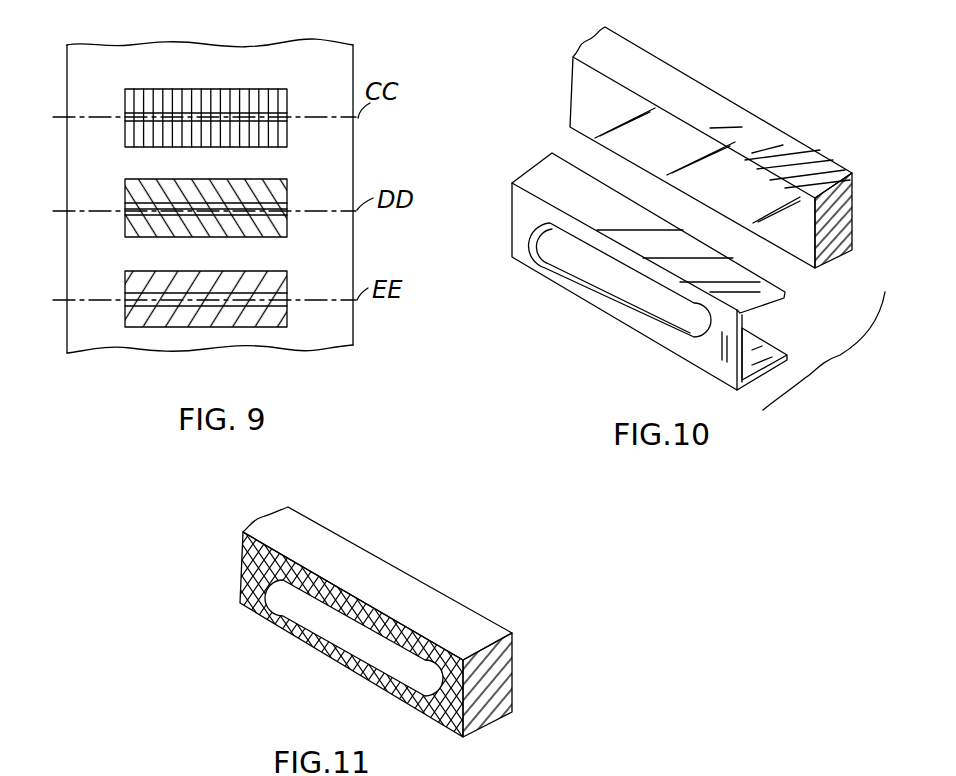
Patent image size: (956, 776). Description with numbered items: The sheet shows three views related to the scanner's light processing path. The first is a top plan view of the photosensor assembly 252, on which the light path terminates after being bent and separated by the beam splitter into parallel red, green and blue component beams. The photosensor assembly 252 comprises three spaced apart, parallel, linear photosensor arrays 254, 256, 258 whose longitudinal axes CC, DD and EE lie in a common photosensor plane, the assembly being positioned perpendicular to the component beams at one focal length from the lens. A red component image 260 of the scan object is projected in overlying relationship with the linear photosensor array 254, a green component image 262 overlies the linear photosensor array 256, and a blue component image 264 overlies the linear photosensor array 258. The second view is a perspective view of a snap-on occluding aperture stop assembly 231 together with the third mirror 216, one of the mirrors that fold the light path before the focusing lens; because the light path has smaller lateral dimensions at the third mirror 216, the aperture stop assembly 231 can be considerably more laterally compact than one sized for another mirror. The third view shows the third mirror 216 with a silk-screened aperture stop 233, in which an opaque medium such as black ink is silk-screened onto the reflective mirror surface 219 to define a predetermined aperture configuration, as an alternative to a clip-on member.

In FIG. 9, the photosensor assembly 252 is at (353, 67).
In FIG. 9, the linear photosensor array 254 is at (125, 110).
In FIG. 9, the linear photosensor array 256 is at (125, 214).
In FIG. 9, the linear photosensor array 258 is at (125, 300).
In FIG. 9, the red component image 260 is at (268, 98).
In FIG. 9, the green component image 262 is at (280, 183).
In FIG. 9, the blue component image 264 is at (273, 277).
In FIG. 10, the reflective mirror surface 219 is at (679, 147).
In FIG. 10, the third mirror 216 is at (783, 145).
In FIG. 11, the third mirror 216 is at (369, 622).
In FIG. 10, the aperture stop assembly 231 is at (701, 358).
In FIG. 11, the silk-screened aperture stop 233 is at (243, 560).